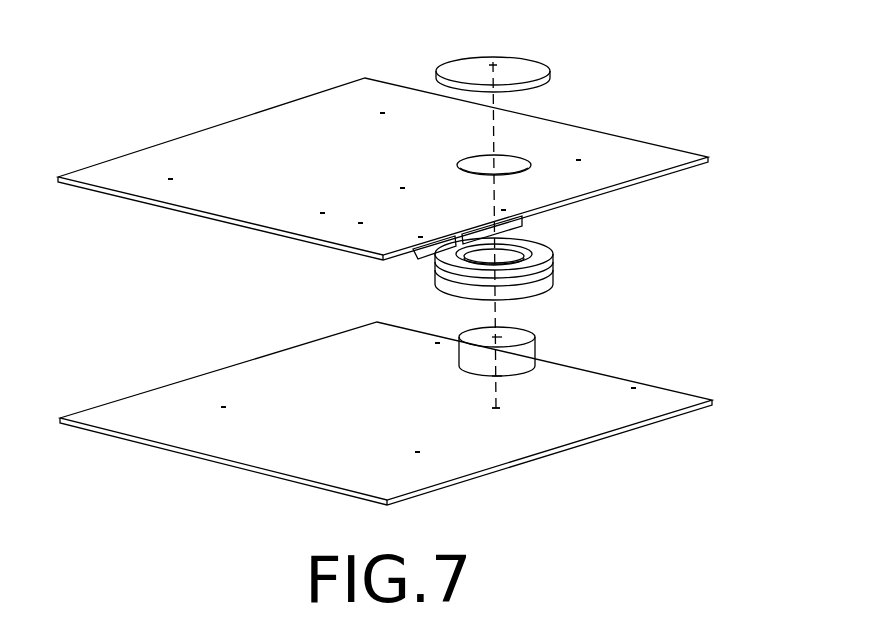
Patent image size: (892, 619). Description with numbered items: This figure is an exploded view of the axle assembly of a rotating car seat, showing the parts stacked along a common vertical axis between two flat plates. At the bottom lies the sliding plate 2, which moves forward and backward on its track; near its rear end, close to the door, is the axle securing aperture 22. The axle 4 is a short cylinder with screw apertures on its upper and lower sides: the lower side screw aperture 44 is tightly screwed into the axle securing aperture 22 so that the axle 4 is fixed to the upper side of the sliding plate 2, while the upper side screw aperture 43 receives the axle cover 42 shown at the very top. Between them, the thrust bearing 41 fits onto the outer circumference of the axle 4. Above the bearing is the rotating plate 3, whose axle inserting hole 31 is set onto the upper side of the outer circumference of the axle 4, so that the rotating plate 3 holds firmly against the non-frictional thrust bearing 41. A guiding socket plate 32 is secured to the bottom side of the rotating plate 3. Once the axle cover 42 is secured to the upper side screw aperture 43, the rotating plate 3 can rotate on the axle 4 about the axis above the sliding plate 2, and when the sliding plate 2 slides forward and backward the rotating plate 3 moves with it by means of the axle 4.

The sliding plate 2 is at (652, 403).
The axle securing aperture 22 is at (500, 410).
The rotating plate 3 is at (648, 155).
The axle inserting hole 31 is at (523, 158).
The guiding socket plate 32 is at (545, 226).
The axle 4 is at (518, 358).
The thrust bearing 41 is at (437, 268).
The axle cover 42 is at (515, 70).
The upper side screw aperture 43 is at (497, 337).
The lower side screw aperture 44 is at (497, 378).